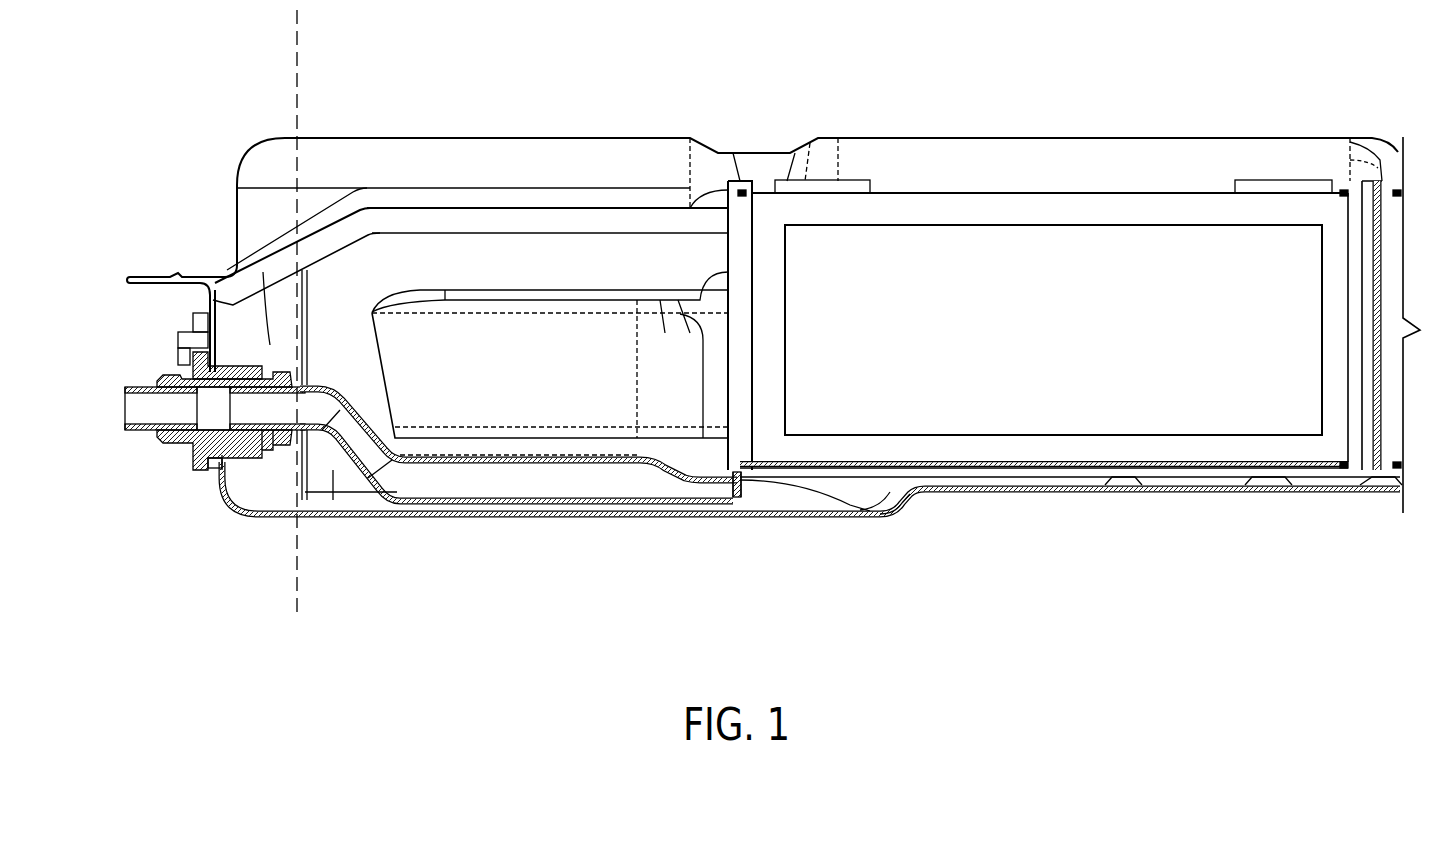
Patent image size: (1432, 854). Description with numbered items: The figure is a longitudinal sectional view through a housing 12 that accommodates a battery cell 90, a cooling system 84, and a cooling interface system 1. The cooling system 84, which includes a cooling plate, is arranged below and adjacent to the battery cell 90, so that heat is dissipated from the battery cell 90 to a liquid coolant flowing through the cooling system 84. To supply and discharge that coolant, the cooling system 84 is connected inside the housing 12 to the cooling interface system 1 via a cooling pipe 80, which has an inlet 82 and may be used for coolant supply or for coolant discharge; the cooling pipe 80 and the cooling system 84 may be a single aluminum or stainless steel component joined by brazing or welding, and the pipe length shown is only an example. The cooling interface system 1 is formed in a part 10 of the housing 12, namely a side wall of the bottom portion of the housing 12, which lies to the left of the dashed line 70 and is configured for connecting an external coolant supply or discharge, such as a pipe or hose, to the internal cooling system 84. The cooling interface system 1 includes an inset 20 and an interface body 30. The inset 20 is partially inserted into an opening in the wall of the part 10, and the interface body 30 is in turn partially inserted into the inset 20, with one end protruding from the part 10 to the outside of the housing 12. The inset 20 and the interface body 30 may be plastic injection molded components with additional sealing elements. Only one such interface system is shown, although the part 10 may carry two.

The cooling interface system 1 is at (734, 317).
The part of the housing 10 is at (222, 146).
The housing 12 is at (652, 112).
The inset 20 is at (238, 462).
The interface body 30 is at (150, 357).
The dashed line 70 is at (297, 52).
The cooling pipe 80 is at (487, 510).
The inlet 82 is at (266, 432).
The cooling system 84 is at (787, 505).
The battery cell 90 is at (1030, 283).